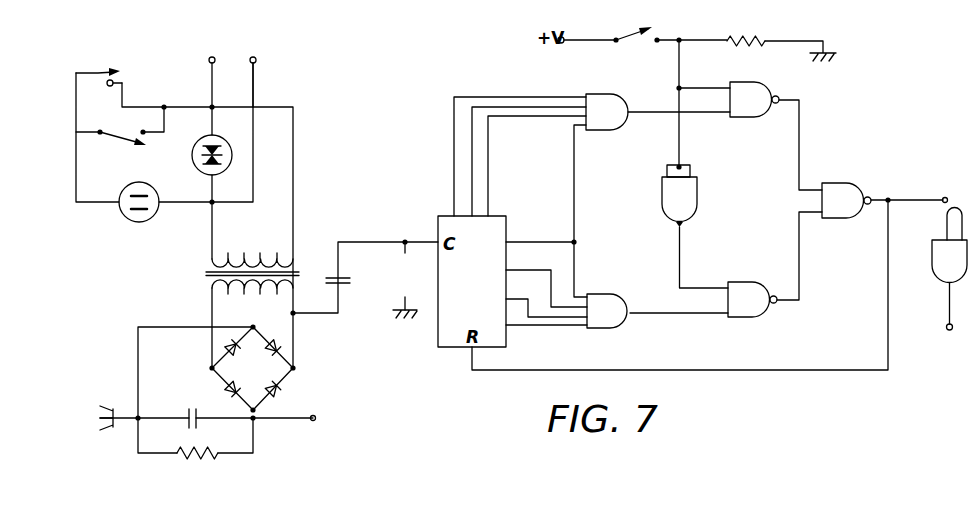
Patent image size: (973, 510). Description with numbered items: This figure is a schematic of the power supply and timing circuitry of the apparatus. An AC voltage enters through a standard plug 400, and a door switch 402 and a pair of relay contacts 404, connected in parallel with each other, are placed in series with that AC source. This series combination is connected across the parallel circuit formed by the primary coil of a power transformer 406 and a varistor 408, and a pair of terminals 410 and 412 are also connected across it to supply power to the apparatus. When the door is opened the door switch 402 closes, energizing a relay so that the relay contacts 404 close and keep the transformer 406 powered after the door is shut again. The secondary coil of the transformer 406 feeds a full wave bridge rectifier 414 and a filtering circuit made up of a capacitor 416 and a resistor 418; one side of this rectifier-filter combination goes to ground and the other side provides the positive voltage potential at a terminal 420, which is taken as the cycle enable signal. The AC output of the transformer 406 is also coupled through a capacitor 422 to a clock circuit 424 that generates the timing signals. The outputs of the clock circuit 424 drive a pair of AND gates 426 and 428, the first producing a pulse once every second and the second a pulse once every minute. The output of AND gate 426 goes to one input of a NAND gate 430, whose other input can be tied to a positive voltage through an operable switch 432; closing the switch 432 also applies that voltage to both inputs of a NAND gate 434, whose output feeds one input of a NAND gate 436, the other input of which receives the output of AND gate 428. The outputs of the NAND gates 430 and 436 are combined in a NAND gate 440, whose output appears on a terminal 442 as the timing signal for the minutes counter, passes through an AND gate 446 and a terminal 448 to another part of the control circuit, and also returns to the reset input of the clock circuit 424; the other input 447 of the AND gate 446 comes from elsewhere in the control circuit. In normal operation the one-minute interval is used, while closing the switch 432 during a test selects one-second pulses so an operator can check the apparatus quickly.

The standard plug 400 is at (133, 220).
The door switch 402 is at (126, 140).
The relay contacts 404 is at (102, 73).
The power transformer 406 is at (205, 275).
The varistor 408 is at (192, 159).
The terminal 410 is at (215, 73).
The terminal 412 is at (256, 73).
The full wave bridge rectifier 414 is at (267, 368).
The capacitor 416 is at (199, 408).
The resistor 418 is at (207, 458).
The terminal 420 is at (316, 420).
The capacitor 422 is at (342, 277).
The clock circuit 424 is at (444, 316).
The AND gate 426 is at (618, 100).
The AND gate 428 is at (610, 322).
The NAND gate 430 is at (751, 108).
The operable switch 432 is at (628, 33).
The NAND gate 434 is at (688, 201).
The NAND gate 436 is at (748, 312).
The NAND gate 440 is at (842, 190).
The terminal 442 is at (946, 197).
The AND gate 446 is at (940, 276).
The input of AND gate 447 is at (945, 226).
The terminal 448 is at (946, 327).